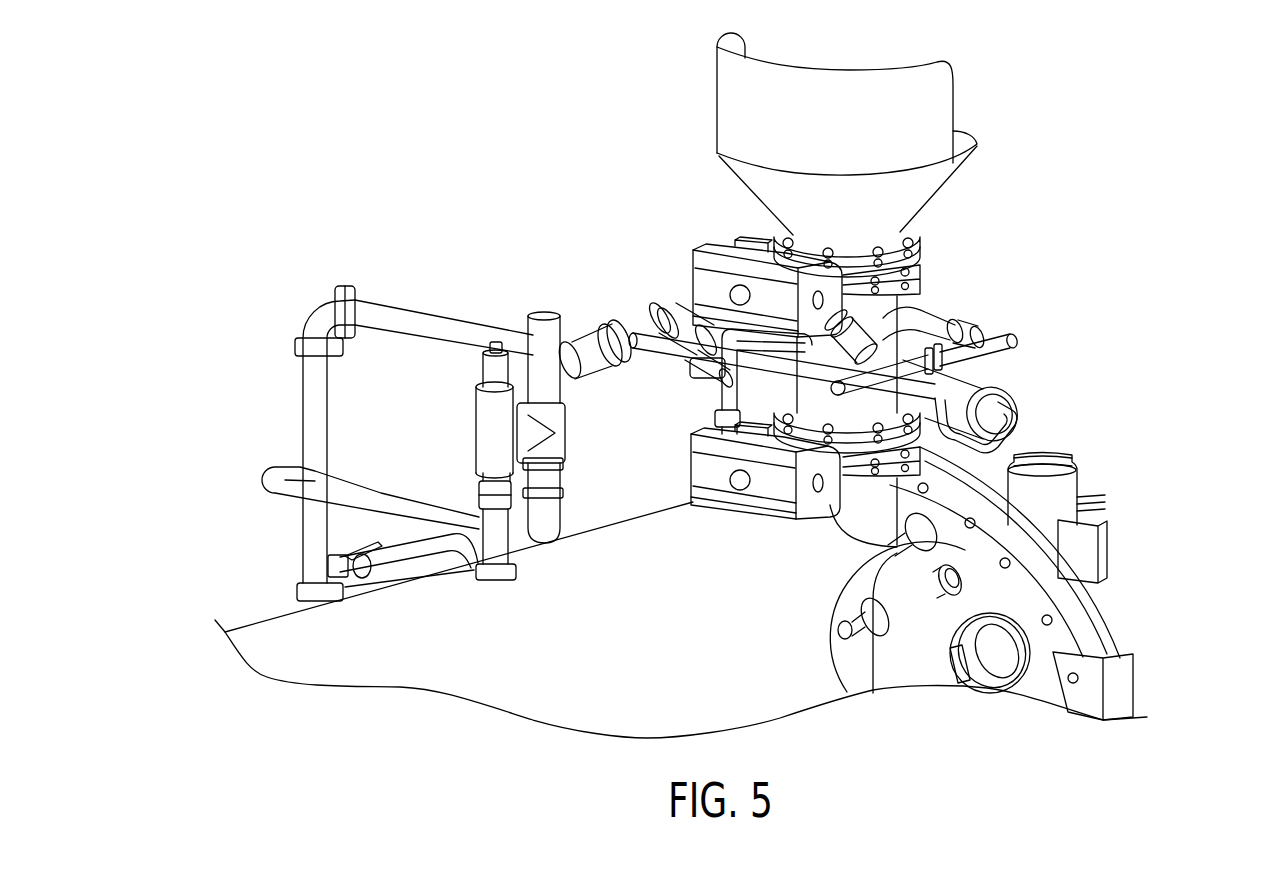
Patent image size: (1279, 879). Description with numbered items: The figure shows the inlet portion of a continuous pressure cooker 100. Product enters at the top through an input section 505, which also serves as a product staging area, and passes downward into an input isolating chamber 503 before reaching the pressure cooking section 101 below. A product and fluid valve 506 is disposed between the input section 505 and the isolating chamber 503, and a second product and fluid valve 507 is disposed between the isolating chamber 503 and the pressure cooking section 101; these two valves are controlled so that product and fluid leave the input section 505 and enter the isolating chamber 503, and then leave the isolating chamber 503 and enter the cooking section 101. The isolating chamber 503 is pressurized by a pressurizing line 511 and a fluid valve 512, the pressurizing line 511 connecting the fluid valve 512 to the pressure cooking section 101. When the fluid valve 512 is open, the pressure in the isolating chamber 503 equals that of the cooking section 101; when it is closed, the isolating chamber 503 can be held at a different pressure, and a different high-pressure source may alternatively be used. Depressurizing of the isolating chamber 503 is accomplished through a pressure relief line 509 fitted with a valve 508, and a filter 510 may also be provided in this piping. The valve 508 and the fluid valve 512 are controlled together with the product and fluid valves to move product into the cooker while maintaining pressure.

The continuous pressure cooker 100 is at (606, 154).
The pressure cooking section 101 is at (513, 653).
The input isolating chamber 503 is at (882, 407).
The input section 505 is at (953, 103).
The product and fluid valve 506 is at (692, 262).
The product and fluid valve 507 is at (690, 473).
The valve 508 is at (902, 352).
The pressure relief line 509 is at (1017, 337).
The filter 510 is at (963, 390).
The pressurizing line 511 is at (720, 393).
The fluid valve 512 is at (660, 318).